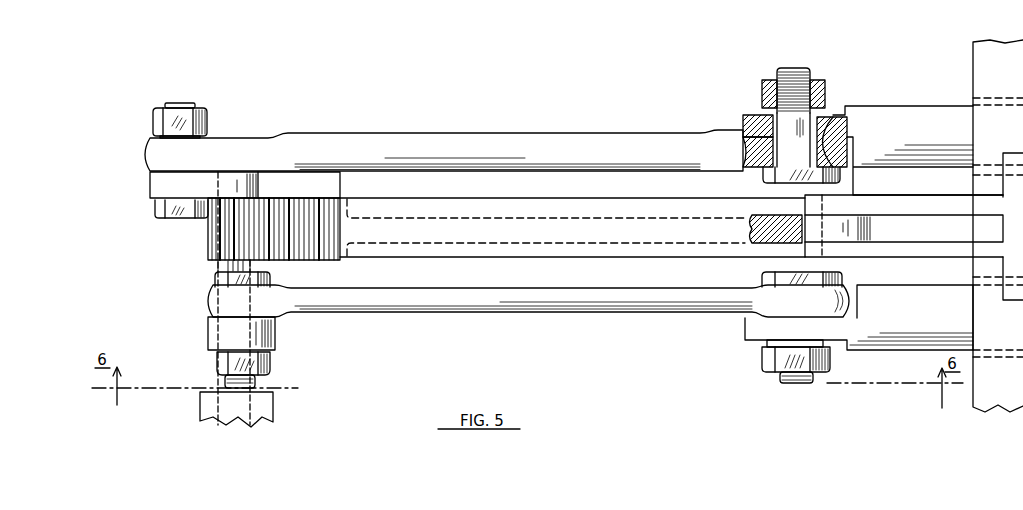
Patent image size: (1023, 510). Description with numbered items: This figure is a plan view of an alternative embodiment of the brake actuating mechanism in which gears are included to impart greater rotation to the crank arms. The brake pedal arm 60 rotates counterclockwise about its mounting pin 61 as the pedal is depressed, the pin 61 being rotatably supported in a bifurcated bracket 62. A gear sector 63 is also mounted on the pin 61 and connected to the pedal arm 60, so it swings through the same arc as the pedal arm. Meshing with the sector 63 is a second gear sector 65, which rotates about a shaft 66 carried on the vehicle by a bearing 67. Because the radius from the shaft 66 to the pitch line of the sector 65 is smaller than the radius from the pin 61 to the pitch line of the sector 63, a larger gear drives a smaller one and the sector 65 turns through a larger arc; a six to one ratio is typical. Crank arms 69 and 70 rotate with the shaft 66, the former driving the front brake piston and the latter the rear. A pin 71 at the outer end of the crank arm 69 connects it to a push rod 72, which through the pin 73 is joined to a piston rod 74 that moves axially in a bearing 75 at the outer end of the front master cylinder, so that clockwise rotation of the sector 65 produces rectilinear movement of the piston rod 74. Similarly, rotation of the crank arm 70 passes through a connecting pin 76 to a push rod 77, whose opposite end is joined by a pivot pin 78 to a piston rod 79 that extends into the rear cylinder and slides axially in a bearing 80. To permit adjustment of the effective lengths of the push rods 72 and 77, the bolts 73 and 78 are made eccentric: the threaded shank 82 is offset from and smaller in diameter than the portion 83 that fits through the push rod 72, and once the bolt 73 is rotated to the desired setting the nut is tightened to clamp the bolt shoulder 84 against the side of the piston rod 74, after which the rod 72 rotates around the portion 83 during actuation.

The brake pedal arm 60 is at (752, 243).
The mounting pin 61 is at (853, 208).
The bifurcated bracket 62 is at (872, 250).
The gear sector 63 is at (643, 203).
The second gear sector 65 is at (283, 208).
The shaft 66 is at (227, 266).
The bearing 67 is at (267, 405).
The crank arm 69 is at (155, 188).
The crank arm 70 is at (263, 333).
The pin 71 is at (176, 103).
The push rod 72 is at (523, 141).
The pin 73 is at (800, 68).
The piston rod 74 is at (925, 115).
The bearing 75 is at (983, 102).
The connecting pin 76 is at (225, 382).
The push rod 77 is at (588, 308).
The pivot pin 78 is at (790, 385).
The piston rod 79 is at (908, 337).
The bearing 80 is at (1020, 353).
The threaded shank 82 is at (795, 87).
The portion 83 is at (782, 157).
The bolt shoulder 84 is at (818, 130).